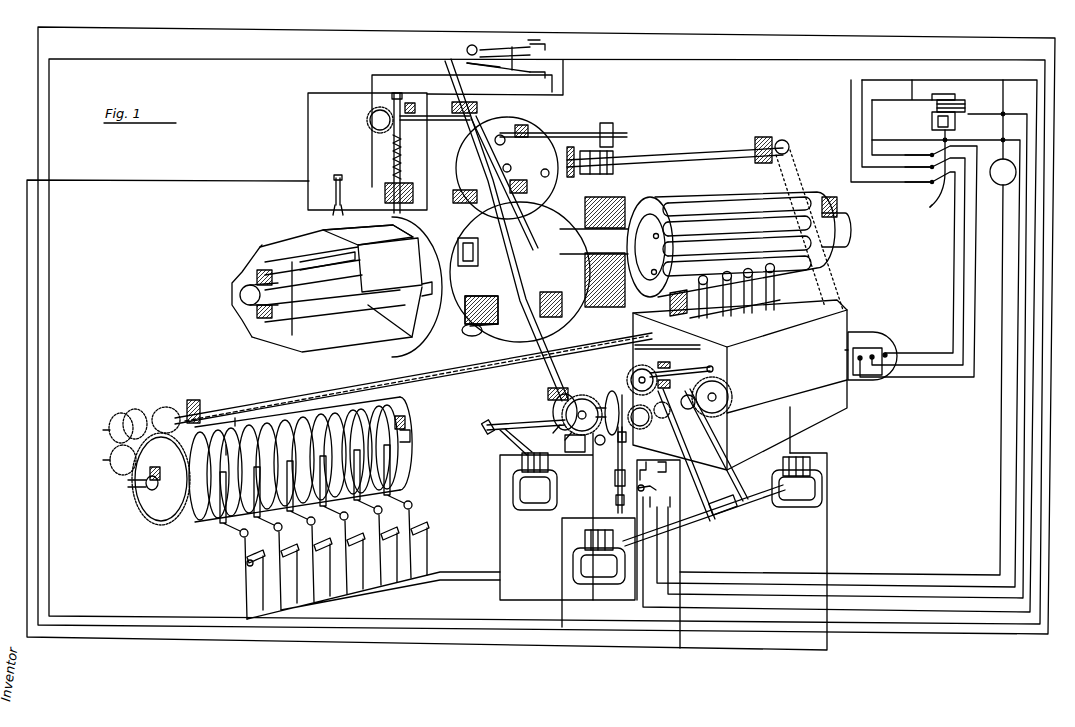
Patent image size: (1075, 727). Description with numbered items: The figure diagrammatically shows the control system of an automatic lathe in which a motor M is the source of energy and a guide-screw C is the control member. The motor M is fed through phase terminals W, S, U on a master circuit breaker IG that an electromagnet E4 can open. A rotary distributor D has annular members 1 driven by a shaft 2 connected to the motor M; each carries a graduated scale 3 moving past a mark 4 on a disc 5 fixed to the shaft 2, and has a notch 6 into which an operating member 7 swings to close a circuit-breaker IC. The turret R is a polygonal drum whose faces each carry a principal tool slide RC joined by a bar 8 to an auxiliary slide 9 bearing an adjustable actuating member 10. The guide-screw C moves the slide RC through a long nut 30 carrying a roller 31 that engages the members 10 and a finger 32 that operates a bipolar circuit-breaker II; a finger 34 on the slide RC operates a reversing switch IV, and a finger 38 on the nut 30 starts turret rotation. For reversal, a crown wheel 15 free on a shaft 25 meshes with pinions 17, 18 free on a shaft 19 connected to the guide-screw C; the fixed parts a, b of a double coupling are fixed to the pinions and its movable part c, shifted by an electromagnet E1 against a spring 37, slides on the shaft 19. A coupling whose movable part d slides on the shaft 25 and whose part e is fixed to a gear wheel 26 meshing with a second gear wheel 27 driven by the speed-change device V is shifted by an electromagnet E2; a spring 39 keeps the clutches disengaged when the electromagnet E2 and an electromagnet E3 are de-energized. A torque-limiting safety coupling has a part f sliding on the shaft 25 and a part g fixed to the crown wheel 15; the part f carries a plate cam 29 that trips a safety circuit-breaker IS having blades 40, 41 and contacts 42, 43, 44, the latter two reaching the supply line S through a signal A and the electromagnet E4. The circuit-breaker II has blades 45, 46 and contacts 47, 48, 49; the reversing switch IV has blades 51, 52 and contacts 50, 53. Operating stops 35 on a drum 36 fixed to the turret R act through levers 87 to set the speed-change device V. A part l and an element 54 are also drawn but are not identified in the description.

The annular members 1 is at (212, 505).
The shaft 2 is at (145, 483).
The graduated scale 3 is at (372, 415).
The mark 4 is at (226, 445).
The disc 5 is at (240, 420).
The notch 6 is at (217, 418).
The operating member 7 is at (226, 528).
The bar 8 is at (467, 252).
The auxiliary slide 9 is at (462, 326).
The actuating member 10 is at (485, 330).
The crown wheel 15 is at (581, 395).
The pinion 17 is at (548, 392).
The pinion 18 is at (575, 454).
The shaft 19 is at (548, 372).
The shaft 25 is at (650, 431).
The gear wheel 26 is at (729, 404).
The second gear wheel 27 is at (722, 443).
The plate cam 29 is at (612, 390).
The long nut 30 is at (485, 328).
The roller 31 is at (505, 269).
The finger 32 is at (520, 234).
The finger 34 is at (352, 262).
The operating stops 35 is at (712, 258).
The drum 36 is at (651, 203).
The spring 37 is at (490, 432).
The finger 38 is at (560, 298).
The spring 39 is at (724, 512).
The blade 40 is at (641, 470).
The blade 41 is at (653, 484).
The contact 42 is at (663, 458).
The contact 43 is at (672, 509).
The contact 44 is at (651, 509).
The blade 45 is at (512, 45).
The blade 46 is at (515, 71).
The contact 47 is at (542, 47).
The contact 48 is at (528, 38).
The contact 49 is at (542, 74).
The contact 50 is at (370, 186).
The blade 51 is at (387, 205).
The blade 52 is at (333, 206).
The contact 53 is at (333, 179).
The pin 54 is at (431, 279).
The levers 87 is at (776, 285).
The bipolar circuit-breaker II is at (495, 46).
The reversing switch IV is at (340, 174).
The circuit-breaker IC is at (250, 566).
The safety circuit-breaker IS is at (621, 471).
The master circuit breaker IG is at (927, 215).
The signal A is at (1003, 172).
The guide-screw C is at (545, 322).
The distributor D is at (150, 508).
The turret R is at (232, 270).
The principal tool slide RC is at (372, 258).
The speed-change device V is at (740, 385).
The motor M is at (858, 378).
The phase terminal W is at (912, 150).
The phase terminal S is at (913, 163).
The phase terminal U is at (912, 177).
The electromagnet E1 is at (538, 511).
The electromagnet E2 is at (796, 502).
The electromagnet E3 is at (592, 577).
The electromagnet E4 is at (966, 105).
The fixed coupling part a is at (553, 416).
The fixed coupling part b is at (563, 447).
The movable coupling part c is at (552, 436).
The movable coupling part d is at (686, 371).
The coupling part e is at (720, 402).
The safety coupling part f is at (622, 411).
The safety coupling part g is at (600, 406).
The rod l is at (673, 345).